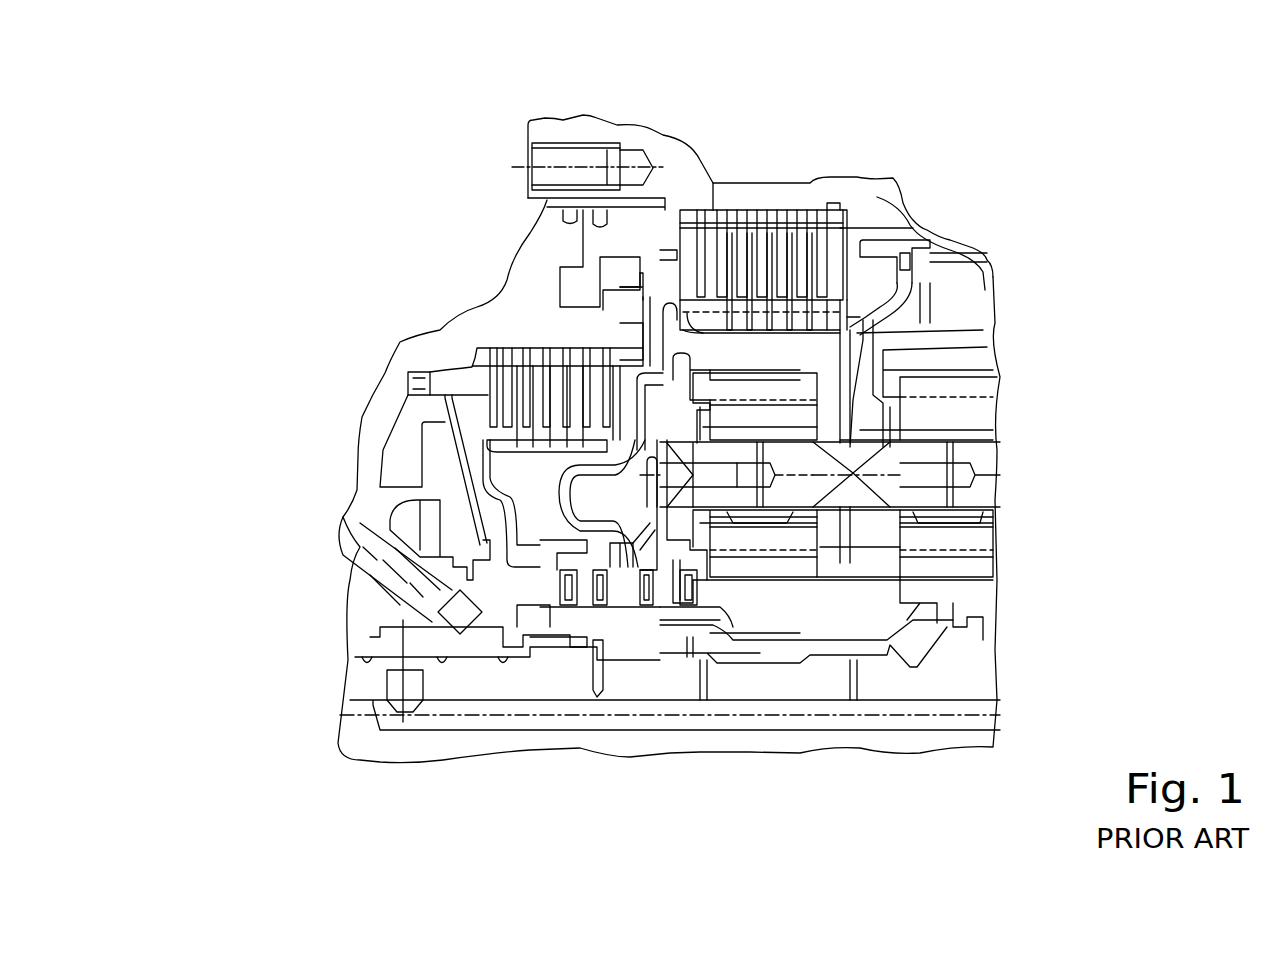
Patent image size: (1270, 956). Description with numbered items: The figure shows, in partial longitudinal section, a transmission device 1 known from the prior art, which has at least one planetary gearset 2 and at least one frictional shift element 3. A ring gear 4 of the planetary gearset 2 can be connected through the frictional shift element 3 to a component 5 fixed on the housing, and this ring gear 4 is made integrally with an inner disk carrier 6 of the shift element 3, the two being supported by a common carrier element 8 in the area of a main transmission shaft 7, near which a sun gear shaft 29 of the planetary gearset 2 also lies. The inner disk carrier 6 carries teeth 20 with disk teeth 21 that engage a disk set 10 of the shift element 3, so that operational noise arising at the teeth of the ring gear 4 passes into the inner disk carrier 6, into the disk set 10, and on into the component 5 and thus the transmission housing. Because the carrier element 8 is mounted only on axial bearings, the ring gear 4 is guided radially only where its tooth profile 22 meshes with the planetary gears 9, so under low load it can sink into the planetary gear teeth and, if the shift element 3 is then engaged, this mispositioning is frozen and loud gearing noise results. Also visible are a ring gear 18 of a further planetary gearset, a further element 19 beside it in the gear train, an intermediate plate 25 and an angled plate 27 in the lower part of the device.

The transmission device 1 is at (338, 176).
The planetary gearset 2 is at (852, 314).
The frictional shift element 3 is at (855, 238).
The ring gear 4 is at (683, 340).
The component fixed on the housing 5 is at (738, 168).
The inner disk carrier 6 is at (668, 303).
The main transmission shaft 7 is at (960, 658).
The carrier element 8 is at (553, 507).
The planetary gears 9 is at (787, 413).
The disk set 10 is at (787, 205).
The ring gear of a further planetary gearset 18 is at (983, 360).
The planet shaft 19 is at (1007, 422).
The teeth of the inner disk carrier 20 is at (712, 312).
The disk teeth 21 is at (840, 210).
The tooth profile of the ring gear 22 is at (703, 380).
The intermediate plate 25 is at (490, 587).
The angled plate 27 is at (560, 573).
The sun gear shaft 29 is at (730, 648).